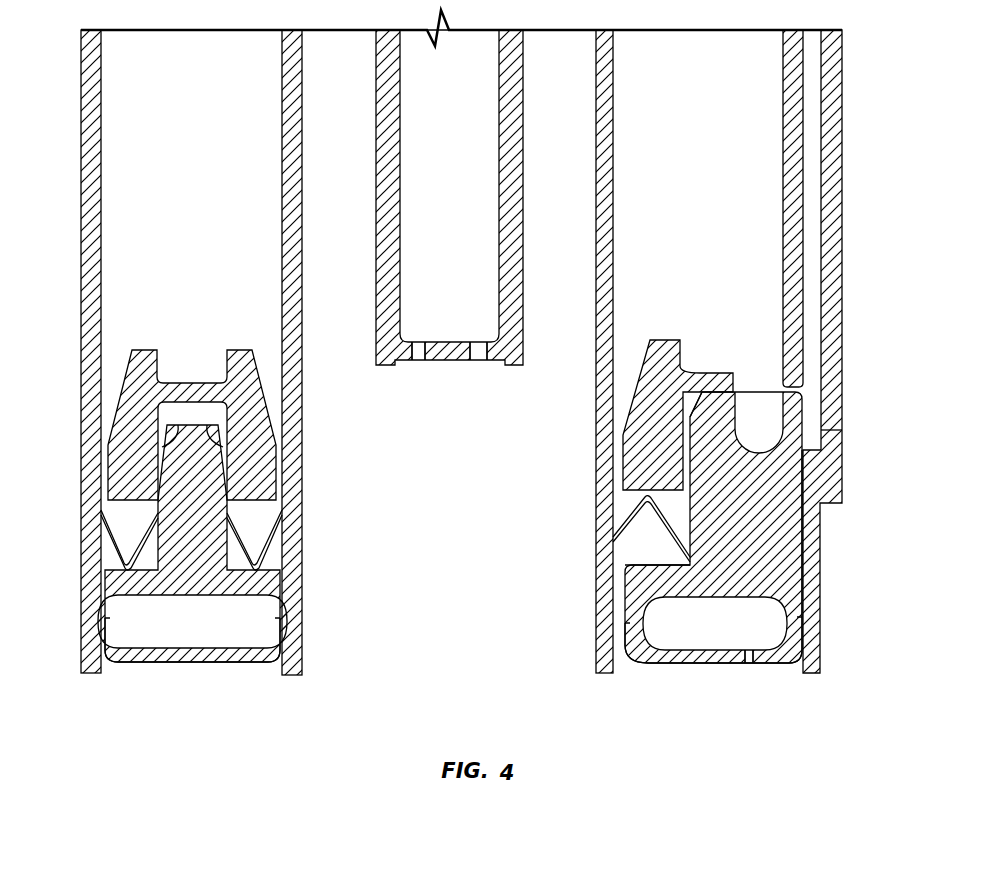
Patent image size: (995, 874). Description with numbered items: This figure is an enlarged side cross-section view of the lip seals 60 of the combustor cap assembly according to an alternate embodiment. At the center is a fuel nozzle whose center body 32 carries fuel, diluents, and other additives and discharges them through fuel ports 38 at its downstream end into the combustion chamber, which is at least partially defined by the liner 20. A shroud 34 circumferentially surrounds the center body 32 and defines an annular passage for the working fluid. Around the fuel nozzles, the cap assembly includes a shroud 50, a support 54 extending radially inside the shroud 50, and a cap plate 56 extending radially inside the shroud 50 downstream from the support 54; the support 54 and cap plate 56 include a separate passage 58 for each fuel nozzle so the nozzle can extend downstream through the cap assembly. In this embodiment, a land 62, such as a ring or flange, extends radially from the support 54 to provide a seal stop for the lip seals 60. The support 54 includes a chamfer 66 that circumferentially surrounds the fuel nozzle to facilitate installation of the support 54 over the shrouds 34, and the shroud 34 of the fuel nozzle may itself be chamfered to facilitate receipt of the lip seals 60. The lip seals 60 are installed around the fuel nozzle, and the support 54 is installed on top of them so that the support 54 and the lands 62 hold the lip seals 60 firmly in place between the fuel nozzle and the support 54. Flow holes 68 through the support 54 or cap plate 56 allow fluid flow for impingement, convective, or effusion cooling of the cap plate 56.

The liner 20 is at (820, 597).
The center body 32 is at (376, 152).
The shroud 34 is at (282, 210).
The fuel ports 38 is at (428, 360).
The shroud 50 is at (842, 170).
The support 54 is at (198, 425).
The cap plate 56 is at (205, 663).
The passage 58 is at (622, 668).
The lip seals 60 is at (107, 548).
The land 62 is at (118, 403).
The chamfer 66 is at (180, 425).
The flow holes 68 is at (745, 665).